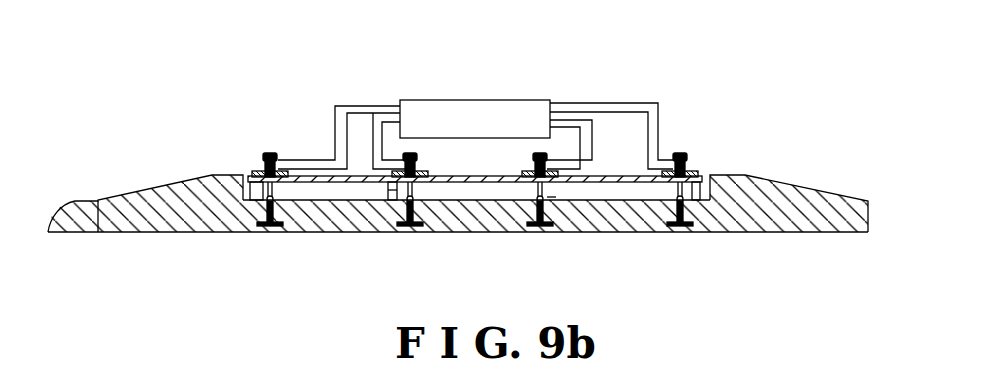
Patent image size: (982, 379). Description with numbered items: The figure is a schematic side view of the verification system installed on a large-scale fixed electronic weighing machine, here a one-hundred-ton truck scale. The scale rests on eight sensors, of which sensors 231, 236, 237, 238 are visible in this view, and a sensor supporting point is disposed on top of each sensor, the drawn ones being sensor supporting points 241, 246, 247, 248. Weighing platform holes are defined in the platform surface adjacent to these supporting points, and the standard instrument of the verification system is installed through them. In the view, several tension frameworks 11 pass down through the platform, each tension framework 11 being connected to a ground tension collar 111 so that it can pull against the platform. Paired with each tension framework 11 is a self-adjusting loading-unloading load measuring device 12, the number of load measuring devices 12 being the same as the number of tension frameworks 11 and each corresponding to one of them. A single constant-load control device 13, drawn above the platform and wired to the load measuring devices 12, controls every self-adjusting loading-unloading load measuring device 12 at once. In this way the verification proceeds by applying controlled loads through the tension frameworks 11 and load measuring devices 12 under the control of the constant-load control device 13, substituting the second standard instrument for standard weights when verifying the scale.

The tension framework 11 is at (276, 154).
The self-adjusting loading-unloading load measuring device 12 is at (263, 161).
The constant-load control device 13 is at (491, 112).
The ground tension collar 111 is at (269, 234).
The sensor 231 is at (249, 205).
The sensor 236 is at (697, 204).
The sensor 237 is at (556, 196).
The sensor 238 is at (387, 203).
The sensor supporting point 241 is at (236, 176).
The sensor supporting point 246 is at (712, 198).
The sensor supporting point 247 is at (565, 184).
The sensor supporting point 248 is at (387, 196).